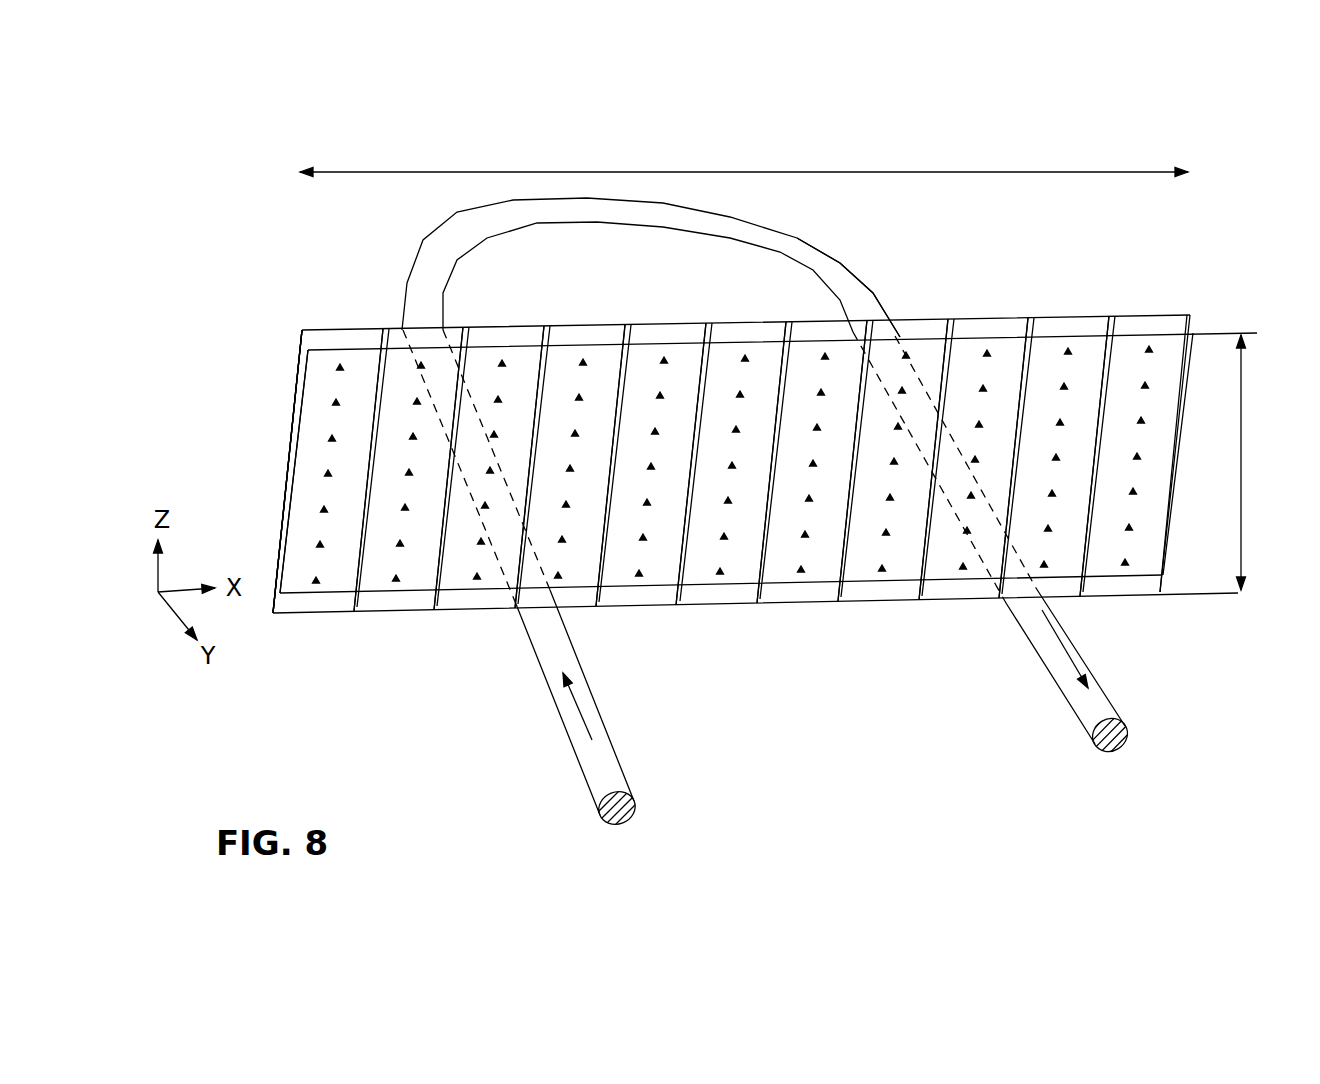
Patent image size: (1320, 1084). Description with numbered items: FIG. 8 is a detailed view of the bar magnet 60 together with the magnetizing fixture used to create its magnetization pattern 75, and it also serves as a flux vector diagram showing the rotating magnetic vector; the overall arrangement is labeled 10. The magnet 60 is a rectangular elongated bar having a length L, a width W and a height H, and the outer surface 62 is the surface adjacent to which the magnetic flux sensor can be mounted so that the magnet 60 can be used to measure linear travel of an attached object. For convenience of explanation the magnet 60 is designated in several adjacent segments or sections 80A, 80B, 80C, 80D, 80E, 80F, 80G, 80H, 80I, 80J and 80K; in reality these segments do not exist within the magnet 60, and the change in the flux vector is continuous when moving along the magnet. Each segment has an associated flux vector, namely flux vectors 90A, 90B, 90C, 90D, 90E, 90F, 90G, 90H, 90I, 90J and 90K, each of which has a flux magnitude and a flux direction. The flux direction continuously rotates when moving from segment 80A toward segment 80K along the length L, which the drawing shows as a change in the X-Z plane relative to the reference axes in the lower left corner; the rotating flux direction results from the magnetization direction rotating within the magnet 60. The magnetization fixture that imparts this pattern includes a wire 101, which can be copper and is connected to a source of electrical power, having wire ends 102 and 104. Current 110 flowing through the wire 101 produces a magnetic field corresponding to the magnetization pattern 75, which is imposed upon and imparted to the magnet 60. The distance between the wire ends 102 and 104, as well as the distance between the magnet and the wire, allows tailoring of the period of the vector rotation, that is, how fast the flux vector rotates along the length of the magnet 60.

The fluid distribution system 10 is at (465, 138).
The magnet 60 is at (1053, 308).
The outer surface 62 is at (307, 460).
The magnetization pattern 75 is at (855, 253).
The segment 80A is at (352, 325).
The segment 80B is at (395, 328).
The segment 80C is at (500, 325).
The segment 80D is at (580, 325).
The segment 80E is at (658, 325).
The segment 80F is at (740, 322).
The segment 80G is at (843, 318).
The segment 80H is at (920, 318).
The segment 80I is at (990, 318).
The segment 80J is at (1080, 318).
The segment 80K is at (1148, 318).
The flux vector 90A is at (318, 585).
The flux vector 90B is at (398, 580).
The flux vector 90C is at (478, 578).
The flux vector 90D is at (560, 575).
The flux vector 90E is at (641, 575).
The flux vector 90F is at (721, 572).
The flux vector 90G is at (803, 569).
The flux vector 90H is at (884, 570).
The flux vector 90I is at (965, 570).
The flux vector 90J is at (1048, 567).
The flux vector 90K is at (1128, 566).
The wire 101 is at (588, 197).
The wire end 102 is at (604, 826).
The wire end 104 is at (1120, 713).
The current 110 is at (580, 710).
The length L is at (778, 172).
The height H is at (1241, 456).
The width W is at (258, 348).